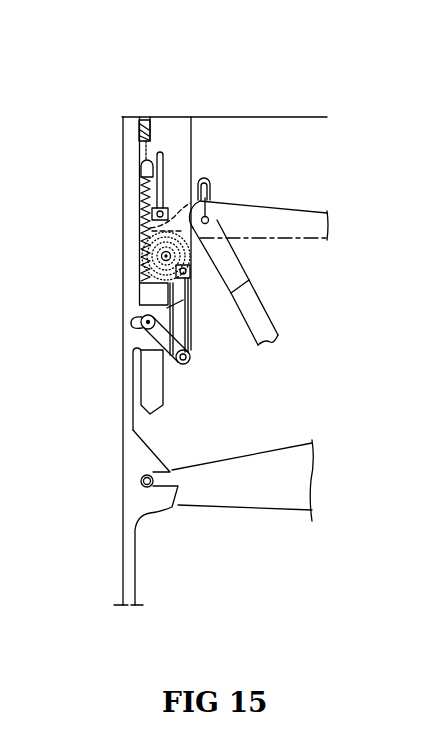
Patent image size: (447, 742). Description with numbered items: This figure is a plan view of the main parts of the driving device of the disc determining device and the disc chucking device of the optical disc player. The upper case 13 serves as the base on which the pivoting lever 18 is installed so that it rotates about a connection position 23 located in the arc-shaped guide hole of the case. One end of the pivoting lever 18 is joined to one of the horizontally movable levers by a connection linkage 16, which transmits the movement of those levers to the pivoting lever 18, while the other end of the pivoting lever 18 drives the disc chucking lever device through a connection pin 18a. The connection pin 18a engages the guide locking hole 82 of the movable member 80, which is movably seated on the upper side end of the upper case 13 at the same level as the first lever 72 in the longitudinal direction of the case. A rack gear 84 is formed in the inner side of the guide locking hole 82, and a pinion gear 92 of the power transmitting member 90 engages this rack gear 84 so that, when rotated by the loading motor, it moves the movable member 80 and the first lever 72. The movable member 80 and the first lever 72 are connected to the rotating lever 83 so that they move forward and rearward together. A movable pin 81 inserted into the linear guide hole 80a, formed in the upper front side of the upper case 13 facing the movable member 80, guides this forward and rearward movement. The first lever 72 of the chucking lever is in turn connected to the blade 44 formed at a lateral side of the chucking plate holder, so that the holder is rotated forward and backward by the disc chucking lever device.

The upper case 13 is at (307, 140).
The connection linkage 16 is at (255, 302).
The pivoting lever 18 is at (273, 226).
The connection pin 18a is at (139, 224).
The connection position 23 is at (207, 178).
The blade 44 is at (240, 466).
The first lever 72 is at (130, 505).
The movable member 80 is at (177, 112).
The linear guide hole 80a is at (134, 318).
The movable pin 81 is at (142, 284).
The guide locking hole 82 is at (137, 242).
The rotating lever 83 is at (150, 338).
The rack gear 84 is at (141, 177).
The power transmitting member 90 is at (212, 255).
The pinion gear 92 is at (137, 259).